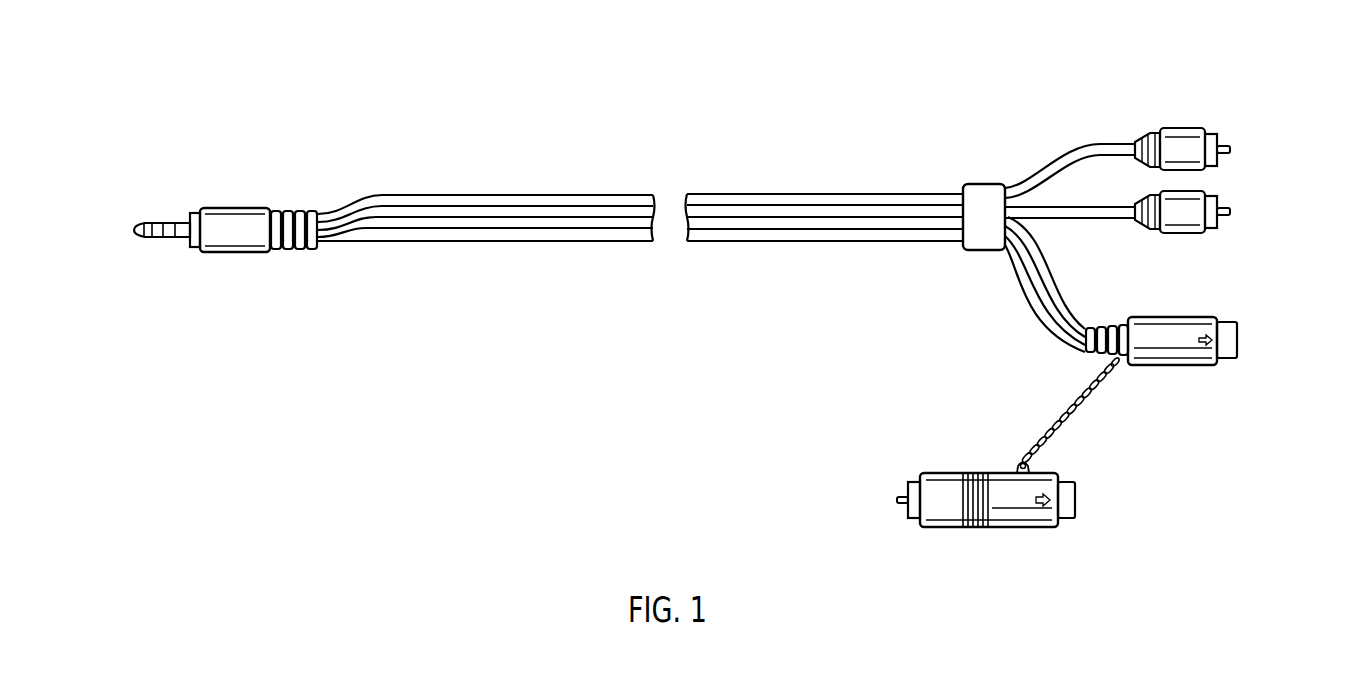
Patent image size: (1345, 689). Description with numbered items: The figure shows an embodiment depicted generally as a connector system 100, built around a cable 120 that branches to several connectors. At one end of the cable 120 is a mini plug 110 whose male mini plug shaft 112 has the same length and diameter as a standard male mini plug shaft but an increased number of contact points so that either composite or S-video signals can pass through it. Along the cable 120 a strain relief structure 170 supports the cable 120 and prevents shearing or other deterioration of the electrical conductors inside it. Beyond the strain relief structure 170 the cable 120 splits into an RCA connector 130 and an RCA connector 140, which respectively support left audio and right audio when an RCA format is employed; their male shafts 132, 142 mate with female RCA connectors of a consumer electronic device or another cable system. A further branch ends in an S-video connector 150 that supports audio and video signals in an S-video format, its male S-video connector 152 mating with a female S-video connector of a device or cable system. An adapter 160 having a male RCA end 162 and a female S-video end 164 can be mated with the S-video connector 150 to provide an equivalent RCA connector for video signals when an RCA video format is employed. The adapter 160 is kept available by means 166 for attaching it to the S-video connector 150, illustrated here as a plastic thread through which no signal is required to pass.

The connector system 100 is at (717, 72).
The mini plug 110 is at (236, 230).
The male mini plug shaft 112 is at (134, 228).
The cable 120 is at (500, 218).
The RCA connector 130 is at (1200, 158).
The male shaft 132 is at (1231, 150).
The RCA connector 140 is at (1195, 230).
The male shaft 142 is at (1231, 211).
The S-video connector 150 is at (1173, 345).
The male S-video connector 152 is at (1238, 340).
The adapter 160 is at (1018, 518).
The male RCA end 162 is at (898, 498).
The female S-video end 164 is at (1076, 487).
The means for attaching 166 is at (1052, 428).
The strain relief structure 170 is at (982, 188).